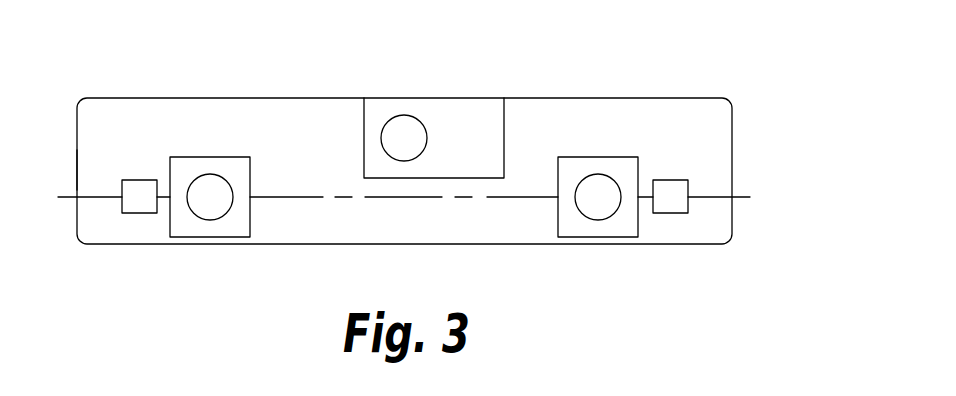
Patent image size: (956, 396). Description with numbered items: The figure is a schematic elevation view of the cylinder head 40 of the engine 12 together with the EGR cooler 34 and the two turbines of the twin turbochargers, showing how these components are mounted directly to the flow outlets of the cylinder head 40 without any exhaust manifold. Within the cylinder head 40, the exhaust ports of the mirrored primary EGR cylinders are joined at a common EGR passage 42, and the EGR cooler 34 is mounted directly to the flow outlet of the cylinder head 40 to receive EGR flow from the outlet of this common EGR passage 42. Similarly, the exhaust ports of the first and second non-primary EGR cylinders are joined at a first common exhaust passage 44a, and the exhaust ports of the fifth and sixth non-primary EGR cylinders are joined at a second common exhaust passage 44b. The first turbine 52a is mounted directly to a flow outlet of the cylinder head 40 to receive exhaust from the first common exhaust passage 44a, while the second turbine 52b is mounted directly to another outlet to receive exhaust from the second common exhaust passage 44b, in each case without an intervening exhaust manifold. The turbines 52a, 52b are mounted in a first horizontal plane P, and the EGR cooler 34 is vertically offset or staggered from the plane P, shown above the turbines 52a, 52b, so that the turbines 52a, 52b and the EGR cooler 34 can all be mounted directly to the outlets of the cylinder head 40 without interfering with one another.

The engine 12 is at (752, 98).
The cylinder head 40 is at (732, 148).
The EGR cooler 34 is at (470, 98).
The common EGR passage 42 is at (393, 115).
The first common exhaust passage 44a is at (615, 180).
The second common exhaust passage 44b is at (219, 175).
The first turbine 52a is at (558, 211).
The second turbine 52b is at (172, 223).
The first horizontal plane P is at (742, 197).